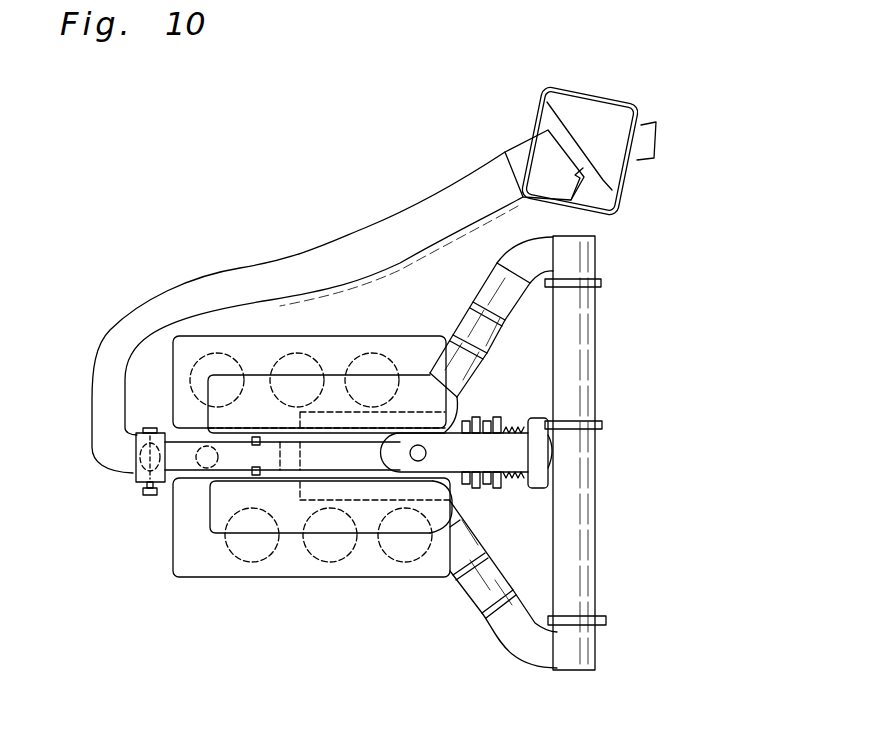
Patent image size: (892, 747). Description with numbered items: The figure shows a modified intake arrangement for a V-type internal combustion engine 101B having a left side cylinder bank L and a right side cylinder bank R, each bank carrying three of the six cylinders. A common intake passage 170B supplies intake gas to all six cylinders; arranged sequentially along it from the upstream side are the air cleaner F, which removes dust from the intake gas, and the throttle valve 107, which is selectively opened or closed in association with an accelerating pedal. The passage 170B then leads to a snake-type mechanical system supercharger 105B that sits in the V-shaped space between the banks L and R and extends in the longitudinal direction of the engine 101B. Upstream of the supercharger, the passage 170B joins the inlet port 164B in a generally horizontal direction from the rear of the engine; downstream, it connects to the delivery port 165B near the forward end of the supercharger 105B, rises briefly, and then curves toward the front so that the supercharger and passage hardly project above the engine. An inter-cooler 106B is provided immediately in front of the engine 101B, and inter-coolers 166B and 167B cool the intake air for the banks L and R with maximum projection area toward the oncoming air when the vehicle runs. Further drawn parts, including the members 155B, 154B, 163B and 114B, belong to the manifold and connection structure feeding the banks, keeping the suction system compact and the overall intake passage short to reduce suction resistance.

The internal combustion engine 101B is at (349, 147).
The air cleaner F is at (597, 98).
The common intake passage 170B is at (270, 262).
The inter-cooler 106B is at (618, 330).
The inter-cooler 167B is at (594, 363).
The inter-cooler 166B is at (600, 555).
The mechanical system supercharger 105B is at (495, 334).
The delivery port 165B is at (437, 453).
The connecting tube 114B is at (477, 493).
The intake manifold right bank 155B is at (207, 410).
The intake manifold left bank 154B is at (210, 517).
The inlet port 164B is at (212, 476).
The cross pipe 163B is at (313, 452).
The throttle valve 107 is at (133, 460).
The right side cylinder bank R is at (180, 366).
The left side cylinder bank L is at (182, 567).